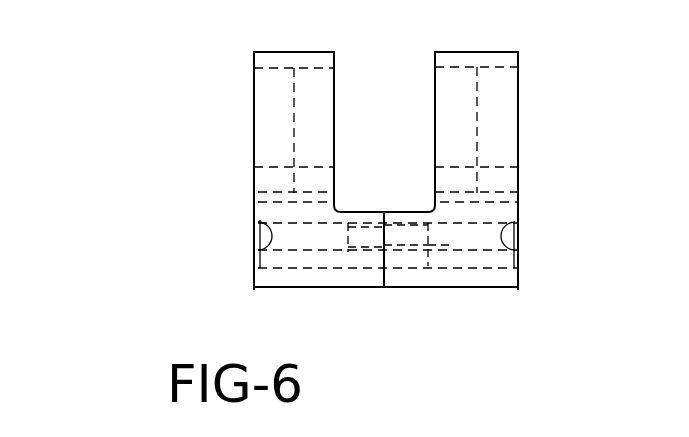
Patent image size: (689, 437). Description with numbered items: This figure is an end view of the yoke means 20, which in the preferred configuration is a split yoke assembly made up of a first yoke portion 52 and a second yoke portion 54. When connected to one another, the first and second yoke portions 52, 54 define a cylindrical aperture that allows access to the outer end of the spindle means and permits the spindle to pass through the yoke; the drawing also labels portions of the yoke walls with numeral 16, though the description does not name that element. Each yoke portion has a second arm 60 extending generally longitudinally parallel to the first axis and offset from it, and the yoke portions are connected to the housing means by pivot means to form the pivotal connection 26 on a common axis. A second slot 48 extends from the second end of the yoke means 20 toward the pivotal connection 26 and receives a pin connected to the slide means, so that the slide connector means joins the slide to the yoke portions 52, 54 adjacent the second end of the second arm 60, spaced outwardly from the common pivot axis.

The legs 16 is at (345, 105).
The yoke means 20 is at (238, 208).
The pivotal connection 26 is at (430, 257).
The second slot 48 is at (282, 64).
The first yoke portion 52 is at (520, 182).
The second yoke portion 54 is at (243, 158).
The second arm 60 is at (280, 52).